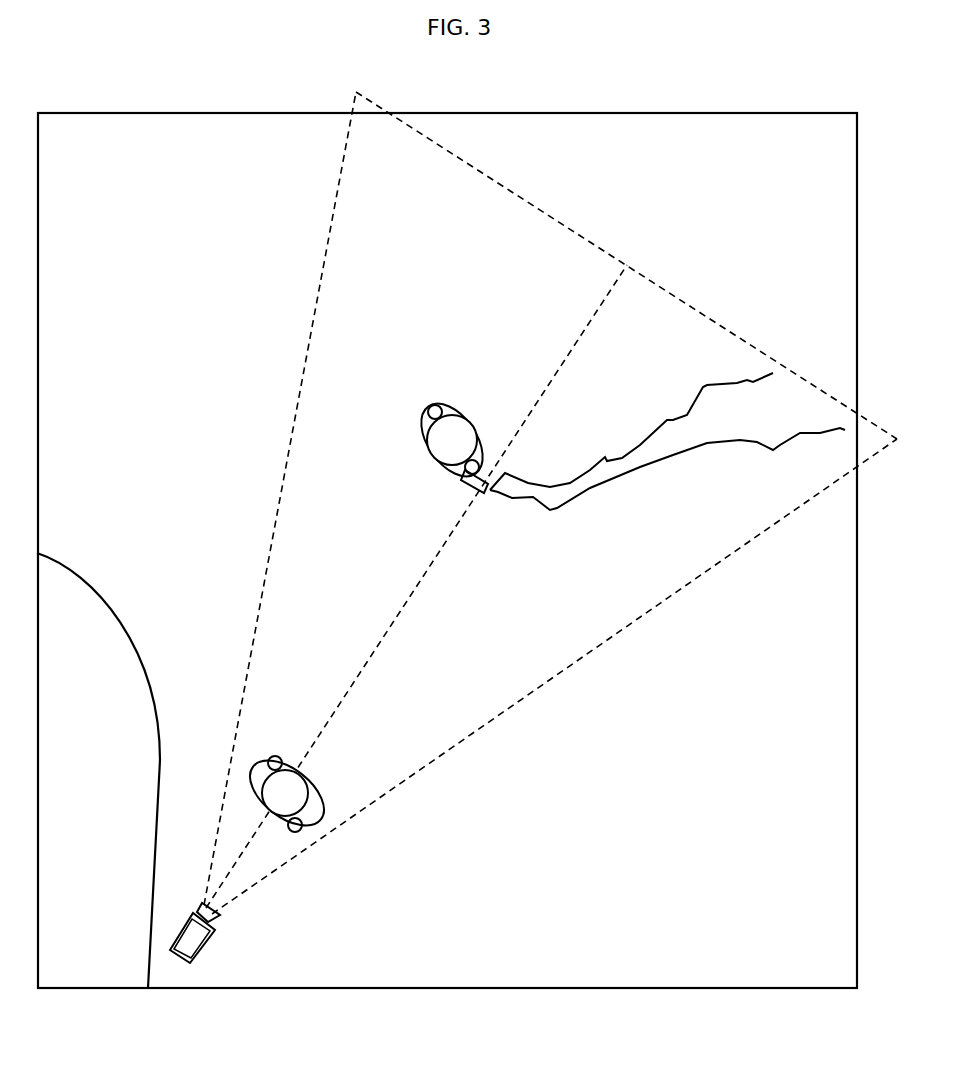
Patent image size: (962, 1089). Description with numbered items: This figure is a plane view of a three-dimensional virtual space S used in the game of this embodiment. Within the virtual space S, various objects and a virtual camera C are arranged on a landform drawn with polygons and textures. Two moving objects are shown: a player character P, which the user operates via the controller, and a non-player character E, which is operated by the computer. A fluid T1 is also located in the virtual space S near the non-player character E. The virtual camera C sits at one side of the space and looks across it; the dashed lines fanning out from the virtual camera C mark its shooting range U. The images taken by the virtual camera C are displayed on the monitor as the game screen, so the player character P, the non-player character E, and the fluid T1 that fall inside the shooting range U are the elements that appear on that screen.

The three-dimensional virtual space S is at (87, 161).
The shooting range of the virtual camera U is at (535, 694).
The virtual camera C is at (215, 945).
The player character P is at (258, 767).
The non-player character E is at (443, 440).
The fluid T1 is at (677, 450).